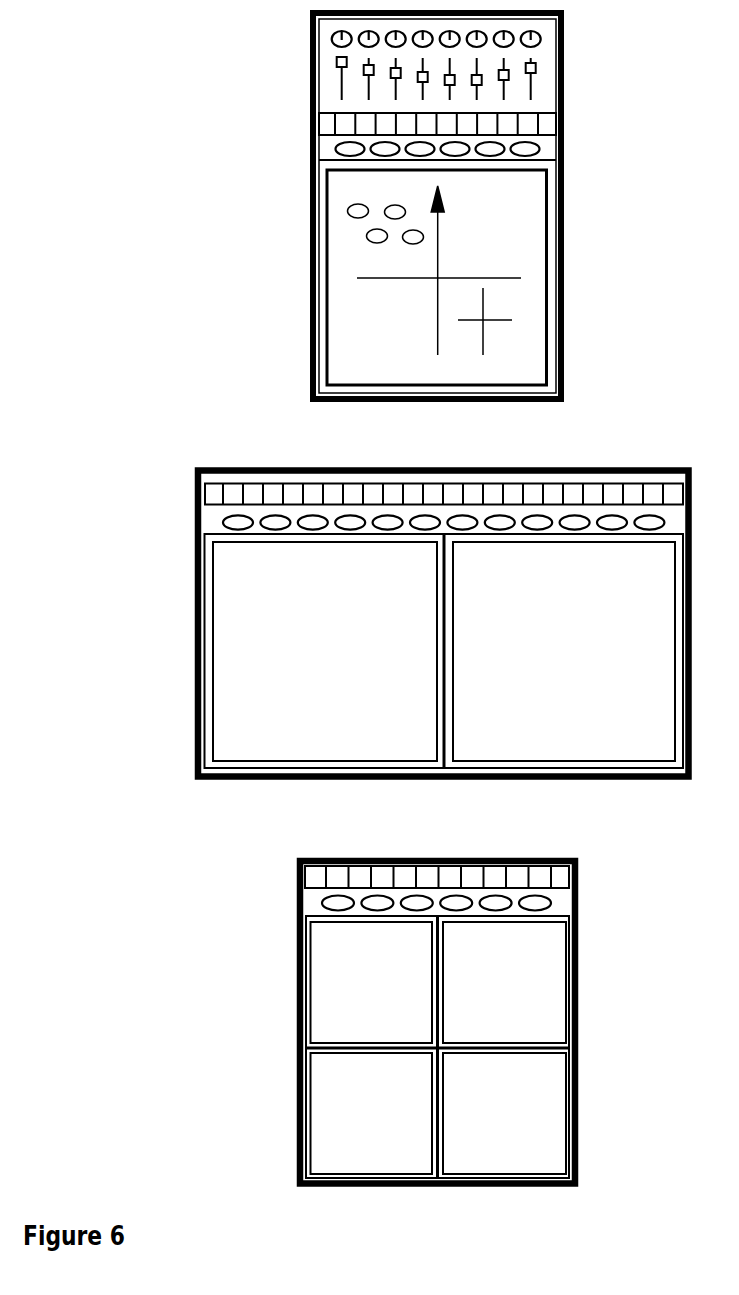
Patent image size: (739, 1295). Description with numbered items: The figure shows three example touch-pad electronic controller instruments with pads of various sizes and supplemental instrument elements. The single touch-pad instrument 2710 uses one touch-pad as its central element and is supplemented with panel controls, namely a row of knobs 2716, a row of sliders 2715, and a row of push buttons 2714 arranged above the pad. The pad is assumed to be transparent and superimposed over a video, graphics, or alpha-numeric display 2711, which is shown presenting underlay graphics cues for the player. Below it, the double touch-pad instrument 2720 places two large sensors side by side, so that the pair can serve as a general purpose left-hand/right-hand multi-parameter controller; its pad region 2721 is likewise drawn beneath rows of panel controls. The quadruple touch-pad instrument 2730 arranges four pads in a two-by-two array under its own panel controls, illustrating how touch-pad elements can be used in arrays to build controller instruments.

The single touch-pad instrument 2710 is at (308, 72).
The alpha-numeric display 2711 is at (342, 317).
The push buttons 2714 is at (552, 126).
The sliders 2715 is at (537, 86).
The knobs 2716 is at (542, 39).
The double touch-pad instrument 2720 is at (196, 475).
The display area 2721 is at (228, 709).
The quadruple touch-pad instrument 2730 is at (297, 868).